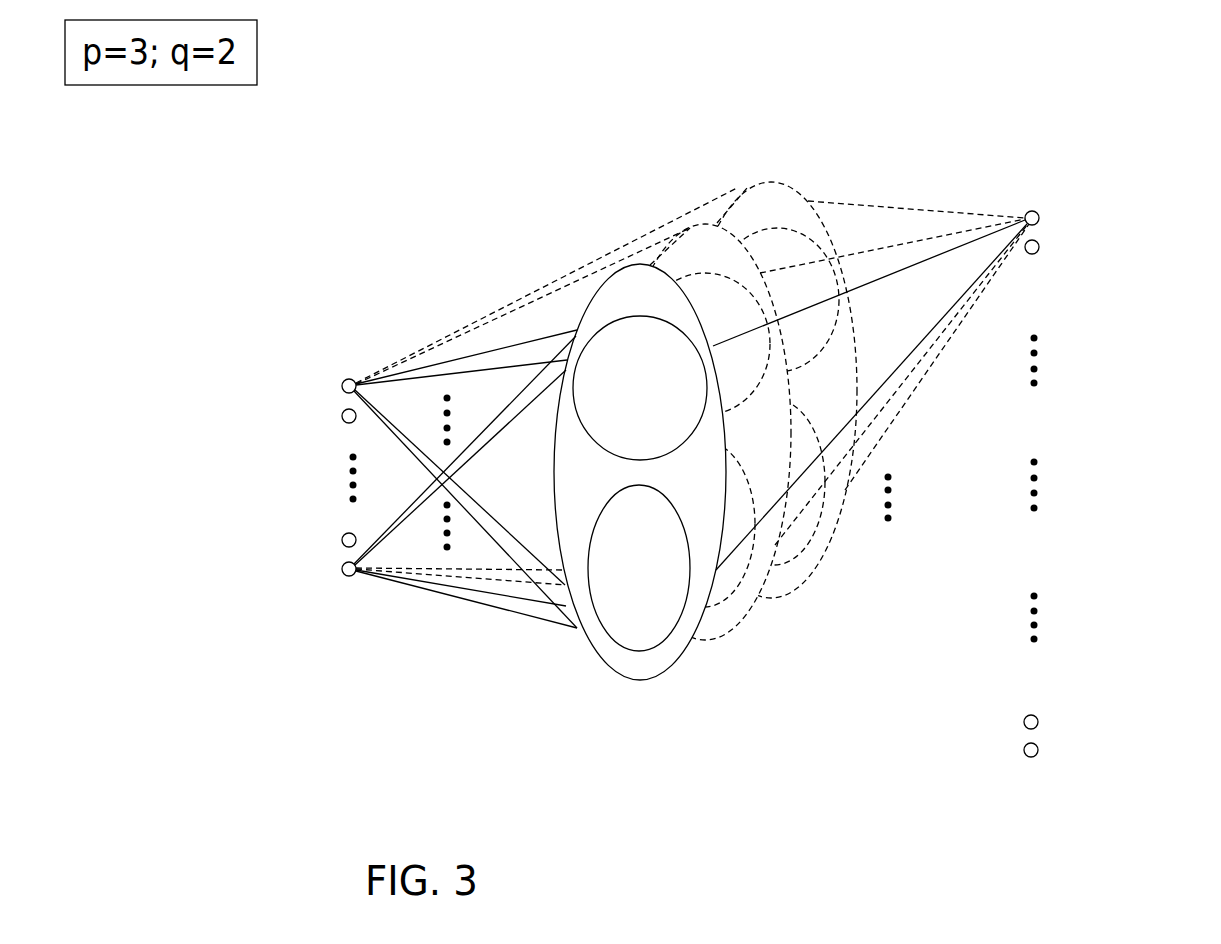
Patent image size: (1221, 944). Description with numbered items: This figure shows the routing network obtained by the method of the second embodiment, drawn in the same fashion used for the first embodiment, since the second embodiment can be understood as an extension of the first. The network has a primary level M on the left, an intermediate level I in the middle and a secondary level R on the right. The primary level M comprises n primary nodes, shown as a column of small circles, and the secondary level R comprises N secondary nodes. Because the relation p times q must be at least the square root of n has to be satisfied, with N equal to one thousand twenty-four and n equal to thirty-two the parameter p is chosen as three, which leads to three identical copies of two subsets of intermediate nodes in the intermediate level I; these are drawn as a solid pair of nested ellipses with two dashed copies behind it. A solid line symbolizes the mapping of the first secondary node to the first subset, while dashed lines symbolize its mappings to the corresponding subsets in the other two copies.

The primary level M is at (350, 176).
The intermediate level I is at (699, 163).
The secondary level R is at (1032, 167).